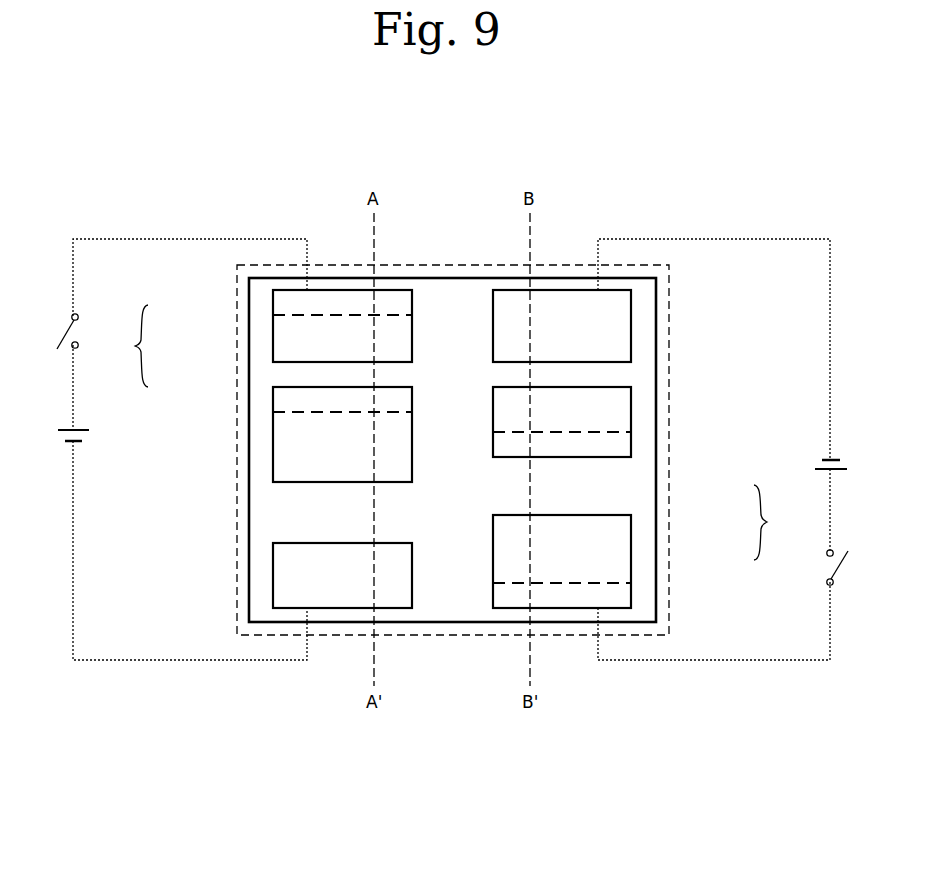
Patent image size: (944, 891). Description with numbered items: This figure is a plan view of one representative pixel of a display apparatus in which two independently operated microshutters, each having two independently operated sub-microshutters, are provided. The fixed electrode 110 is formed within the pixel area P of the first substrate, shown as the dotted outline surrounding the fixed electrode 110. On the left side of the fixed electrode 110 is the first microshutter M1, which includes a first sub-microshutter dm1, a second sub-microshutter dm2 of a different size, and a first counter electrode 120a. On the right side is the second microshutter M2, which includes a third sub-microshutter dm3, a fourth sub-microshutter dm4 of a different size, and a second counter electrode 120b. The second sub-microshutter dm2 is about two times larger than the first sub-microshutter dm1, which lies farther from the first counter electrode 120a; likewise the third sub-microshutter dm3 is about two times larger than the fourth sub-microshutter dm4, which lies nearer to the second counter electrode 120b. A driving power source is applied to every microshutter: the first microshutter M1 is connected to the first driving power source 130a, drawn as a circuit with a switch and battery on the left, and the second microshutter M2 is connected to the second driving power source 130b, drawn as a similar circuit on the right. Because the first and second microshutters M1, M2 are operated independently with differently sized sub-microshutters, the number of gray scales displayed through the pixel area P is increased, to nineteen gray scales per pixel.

The fixed electrode 110 is at (249, 512).
The pixel area P is at (237, 472).
The first sub-microshutter dm1 is at (275, 303).
The second sub-microshutter dm2 is at (275, 400).
The third sub-microshutter dm3 is at (631, 597).
The fourth sub-microshutter dm4 is at (631, 443).
The first microshutter M1 is at (126, 346).
The second microshutter M2 is at (776, 522).
The first counter electrode 120a is at (273, 574).
The second counter electrode 120b is at (631, 322).
The first driving power source 130a is at (205, 660).
The second driving power source 130b is at (695, 660).